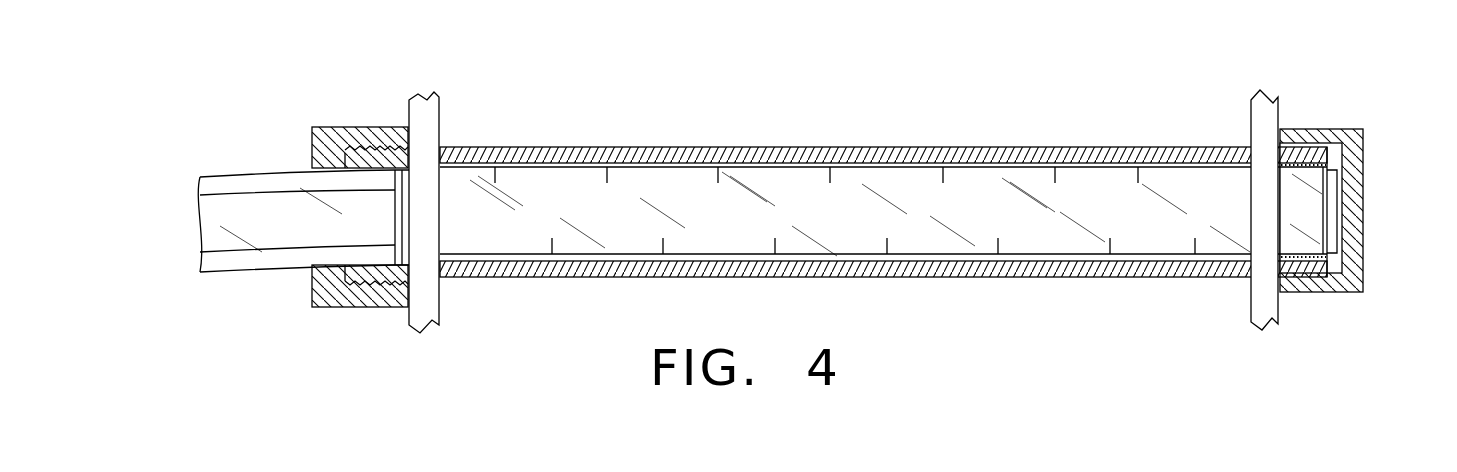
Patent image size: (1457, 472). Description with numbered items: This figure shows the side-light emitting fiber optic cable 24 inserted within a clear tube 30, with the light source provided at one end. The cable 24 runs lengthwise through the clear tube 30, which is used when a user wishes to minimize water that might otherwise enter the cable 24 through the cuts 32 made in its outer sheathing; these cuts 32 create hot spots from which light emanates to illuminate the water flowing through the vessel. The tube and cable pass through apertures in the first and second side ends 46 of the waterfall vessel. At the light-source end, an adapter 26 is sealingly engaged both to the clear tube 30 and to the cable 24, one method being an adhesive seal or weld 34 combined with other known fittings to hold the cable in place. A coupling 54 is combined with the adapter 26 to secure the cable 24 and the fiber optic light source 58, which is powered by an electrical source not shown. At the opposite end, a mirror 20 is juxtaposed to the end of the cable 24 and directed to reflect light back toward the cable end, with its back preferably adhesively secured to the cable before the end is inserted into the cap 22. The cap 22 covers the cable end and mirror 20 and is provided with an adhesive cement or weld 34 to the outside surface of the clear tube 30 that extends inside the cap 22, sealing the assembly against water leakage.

The mirror 20 is at (1336, 185).
The cap 22 is at (1363, 278).
The side-light emitting fiber optic cable 24 is at (736, 225).
The adapter 26 is at (367, 284).
The clear tube 30 is at (671, 142).
The cuts 32 is at (941, 182).
The adhesive seal or weld 34 is at (1300, 163).
The side end 46 is at (440, 115).
The coupling 54 is at (364, 127).
The fiber optic light source 58 is at (267, 170).